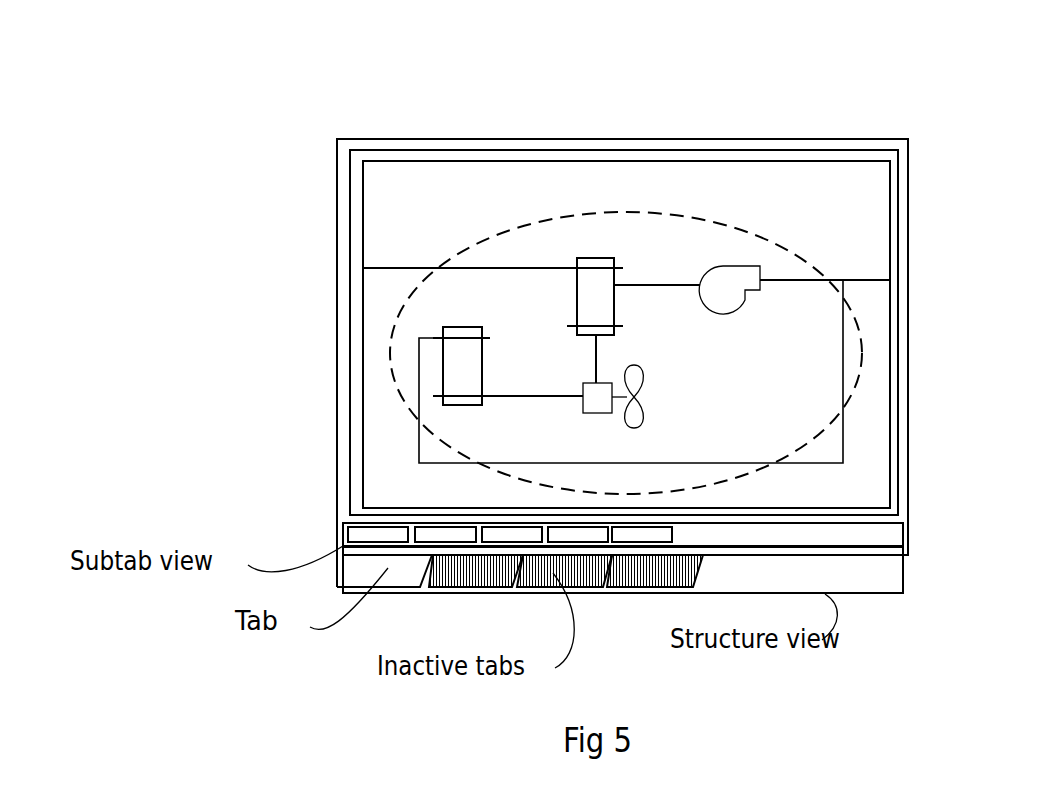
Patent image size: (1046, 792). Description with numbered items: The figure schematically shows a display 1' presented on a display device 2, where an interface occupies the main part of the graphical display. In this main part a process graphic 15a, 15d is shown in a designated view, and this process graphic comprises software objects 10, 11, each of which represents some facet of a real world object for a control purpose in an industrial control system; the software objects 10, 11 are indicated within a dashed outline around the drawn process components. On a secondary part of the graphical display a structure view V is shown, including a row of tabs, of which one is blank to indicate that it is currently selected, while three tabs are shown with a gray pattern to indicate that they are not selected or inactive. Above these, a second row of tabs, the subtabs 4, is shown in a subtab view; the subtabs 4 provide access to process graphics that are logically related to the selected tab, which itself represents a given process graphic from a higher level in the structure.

The display system 1' is at (576, 299).
The display device 2 is at (338, 192).
The subtabs 4 is at (373, 538).
The software object 10 is at (613, 213).
The software object 11 is at (626, 271).
The process graphic 15a is at (363, 266).
The process graphic 15d is at (535, 356).
The structure view V is at (626, 292).